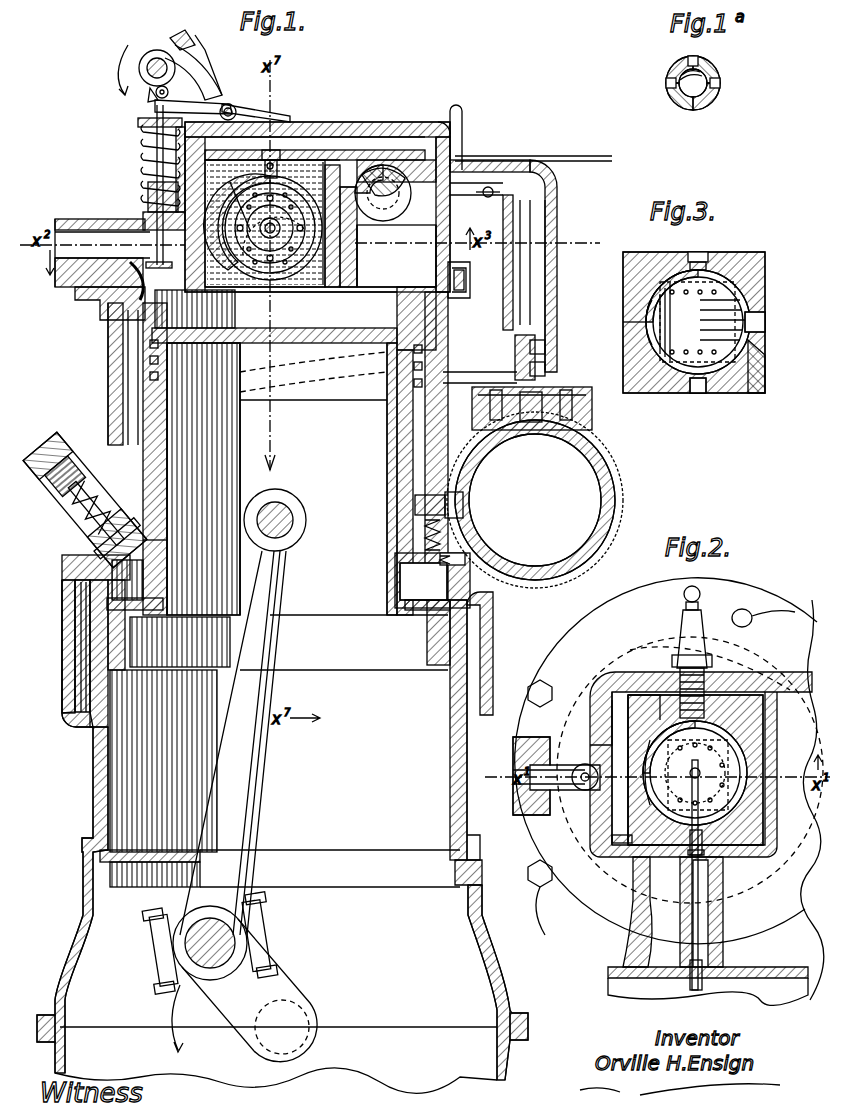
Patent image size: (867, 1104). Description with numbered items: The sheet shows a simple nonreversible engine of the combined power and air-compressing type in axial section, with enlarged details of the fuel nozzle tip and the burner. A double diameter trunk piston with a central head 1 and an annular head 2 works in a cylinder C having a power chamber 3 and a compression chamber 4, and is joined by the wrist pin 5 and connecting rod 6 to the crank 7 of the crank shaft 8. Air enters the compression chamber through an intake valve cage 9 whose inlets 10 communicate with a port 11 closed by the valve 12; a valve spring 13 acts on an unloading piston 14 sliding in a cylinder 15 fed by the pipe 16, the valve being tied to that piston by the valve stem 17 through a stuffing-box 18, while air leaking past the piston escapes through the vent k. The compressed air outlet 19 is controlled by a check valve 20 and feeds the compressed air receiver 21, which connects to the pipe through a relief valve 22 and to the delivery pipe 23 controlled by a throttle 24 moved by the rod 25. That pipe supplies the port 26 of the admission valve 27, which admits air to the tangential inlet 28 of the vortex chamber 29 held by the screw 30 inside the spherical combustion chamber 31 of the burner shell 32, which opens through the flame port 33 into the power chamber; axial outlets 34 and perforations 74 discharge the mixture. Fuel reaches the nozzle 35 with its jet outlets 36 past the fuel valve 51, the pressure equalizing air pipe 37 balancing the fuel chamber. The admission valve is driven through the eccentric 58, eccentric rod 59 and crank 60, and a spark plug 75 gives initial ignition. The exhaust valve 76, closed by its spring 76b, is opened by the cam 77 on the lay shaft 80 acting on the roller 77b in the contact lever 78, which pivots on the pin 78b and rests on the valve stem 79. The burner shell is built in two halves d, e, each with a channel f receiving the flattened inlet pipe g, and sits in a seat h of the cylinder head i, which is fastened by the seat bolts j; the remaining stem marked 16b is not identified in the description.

In FIG. 1, the central head 1 is at (352, 330).
In FIG. 2, the central head 1 is at (665, 660).
In FIG. 1, the annular head 2 is at (423, 581).
In FIG. 1, the power chamber 3 is at (298, 301).
In FIG. 2, the power chamber 3 is at (775, 870).
In FIG. 1, the compression chamber 4 is at (410, 590).
In FIG. 1, the wrist pin 5 is at (294, 520).
In FIG. 1, the connecting rod 6 is at (233, 743).
In FIG. 1, the crank 7 is at (262, 975).
In FIG. 1, the crank shaft 8 is at (312, 1008).
In FIG. 1, the intake valve cage 9 is at (44, 432).
In FIG. 1, the inlets 10 is at (105, 540).
In FIG. 1, the port 11 is at (125, 555).
In FIG. 1, the valve 12 is at (168, 545).
In FIG. 1, the valve spring 13 is at (80, 500).
In FIG. 1, the unloading piston 14 is at (62, 488).
In FIG. 1, the cylinder 15 is at (72, 450).
In FIG. 1, the pipe 16 is at (470, 384).
In FIG. 1, the valve stem 17 is at (175, 500).
In FIG. 1, the stuffing-box 18 is at (90, 515).
In FIG. 1, the compressed air outlet 19 is at (405, 572).
In FIG. 1, the check valve 20 is at (442, 548).
In FIG. 1, the compressed air receiver 21 is at (535, 487).
In FIG. 1, the relief valve 22 is at (515, 358).
In FIG. 1, the compressed air delivery pipe 23 is at (548, 280).
In FIG. 1, the throttle 24 is at (498, 190).
In FIG. 1, the rod 25 is at (545, 155).
In FIG. 1, the port 26 is at (414, 215).
In FIG. 1, the admission valve 27 is at (380, 222).
In FIG. 1, the inlet 28 is at (380, 165).
In FIG. 1, the vortex chamber 29 is at (278, 260).
In FIG. 3, the vortex chamber 29 is at (655, 340).
In FIG. 2, the vortex chamber 29 is at (770, 800).
In FIG. 1, the screw 30 is at (275, 165).
In FIG. 1, the spherical combustion chamber 31 is at (250, 178).
In FIG. 3, the spherical combustion chamber 31 is at (660, 292).
In FIG. 2, the spherical combustion chamber 31 is at (645, 790).
In FIG. 1, the burner shell 32 is at (332, 165).
In FIG. 3, the burner shell 32 is at (765, 240).
In FIG. 2, the burner shell 32 is at (640, 860).
In FIG. 1, the flame port 33 is at (258, 280).
In FIG. 2, the flame port 33 is at (625, 735).
In FIG. 1, the axial outlets 34 is at (280, 250).
In FIG. 3, the axial outlets 34 is at (712, 280).
In FIG. 2, the axial outlets 34 is at (720, 730).
In FIG. 1, the nozzle 35 is at (266, 225).
In FIG. 1A, the nozzle 35 is at (712, 98).
In FIG. 2, the nozzle 35 is at (702, 770).
In FIG. 1, the jet outlets 36 is at (262, 238).
In FIG. 1A, the jet outlets 36 is at (688, 60).
In FIG. 2, the jet outlets 36 is at (695, 773).
In FIG. 1, the pressure equalizing air pipe 37 is at (464, 133).
In FIG. 2, the fuel valve 51 is at (718, 930).
In FIG. 1, the eccentric 58 is at (195, 60).
In FIG. 1, the eccentric rod 59 is at (240, 104).
In FIG. 1, the crank 60 is at (440, 122).
In FIG. 1, the perforations 74 is at (290, 258).
In FIG. 3, the perforations 74 is at (690, 288).
In FIG. 2, the perforations 74 is at (735, 735).
In FIG. 1, the spark plug 75 is at (275, 170).
In FIG. 2, the spark plug 75 is at (674, 610).
In FIG. 1, the exhaust valve 76 is at (78, 283).
In FIG. 1, the spring 76b is at (143, 160).
In FIG. 1, the cam 77 is at (148, 45).
In FIG. 1, the roller 77b is at (148, 100).
In FIG. 1, the contact lever 78 is at (195, 100).
In FIG. 1, the pin 78b is at (226, 103).
In FIG. 1, the valve stem 79 is at (143, 143).
In FIG. 1, the lay shaft 80 is at (139, 68).
In FIG. 1, the cylinder C is at (107, 350).
In FIG. 1, the burner shell half d is at (216, 223).
In FIG. 3, the burner shell half d is at (635, 280).
In FIG. 2, the burner shell half d is at (755, 790).
In FIG. 1, the burner shell half e is at (320, 170).
In FIG. 3, the burner shell half e is at (648, 328).
In FIG. 2, the burner shell half e is at (748, 735).
In FIG. 1, the channel f is at (345, 185).
In FIG. 3, the channel f is at (765, 350).
In FIG. 3, the inlet pipe g is at (758, 330).
In FIG. 1, the seat h is at (150, 195).
In FIG. 2, the seat h is at (640, 820).
In FIG. 1, the cylinder head i is at (444, 128).
In FIG. 1, the seat bolts j is at (470, 272).
In FIG. 2, the seat bolts j is at (552, 690).
In FIG. 1, the vent k is at (50, 440).
In FIG. 1, the valve stem 16b is at (98, 470).